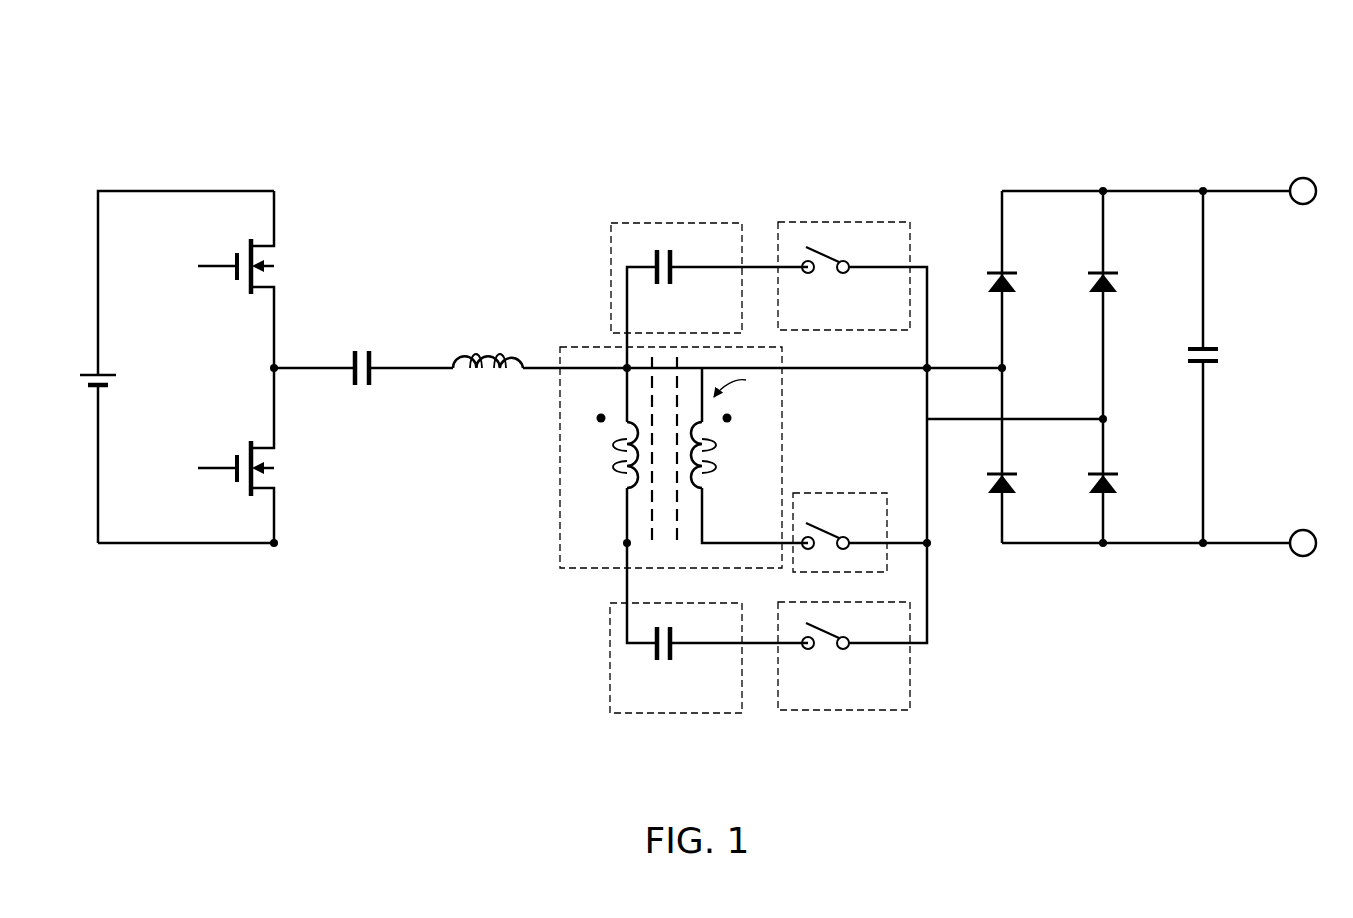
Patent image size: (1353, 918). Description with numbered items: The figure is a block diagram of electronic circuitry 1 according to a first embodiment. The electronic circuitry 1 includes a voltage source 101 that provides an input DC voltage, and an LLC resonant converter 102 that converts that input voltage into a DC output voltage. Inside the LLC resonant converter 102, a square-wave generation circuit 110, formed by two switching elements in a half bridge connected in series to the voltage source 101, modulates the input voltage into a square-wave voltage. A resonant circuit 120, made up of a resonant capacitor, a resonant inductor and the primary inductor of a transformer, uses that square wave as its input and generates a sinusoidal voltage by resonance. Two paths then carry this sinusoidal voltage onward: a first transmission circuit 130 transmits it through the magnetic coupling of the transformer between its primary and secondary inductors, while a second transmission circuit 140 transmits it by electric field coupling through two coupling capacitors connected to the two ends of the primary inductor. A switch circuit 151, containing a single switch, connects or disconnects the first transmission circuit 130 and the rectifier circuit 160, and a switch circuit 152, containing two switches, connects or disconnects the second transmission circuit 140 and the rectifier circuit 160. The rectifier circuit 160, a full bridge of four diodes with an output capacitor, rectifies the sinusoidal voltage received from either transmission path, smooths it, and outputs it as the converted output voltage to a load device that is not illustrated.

The electronic circuitry 1 is at (206, 73).
The voltage source 101 is at (177, 367).
The LLC resonant converter 102 is at (728, 112).
The square-wave generation circuit 110 is at (253, 355).
The resonant circuit 120 is at (450, 264).
The first transmission circuit 130 is at (560, 474).
The second transmission circuit 140 is at (611, 243).
The switch circuit 151 is at (862, 493).
The switch circuit 152 is at (867, 222).
The rectifier circuit 160 is at (1150, 341).